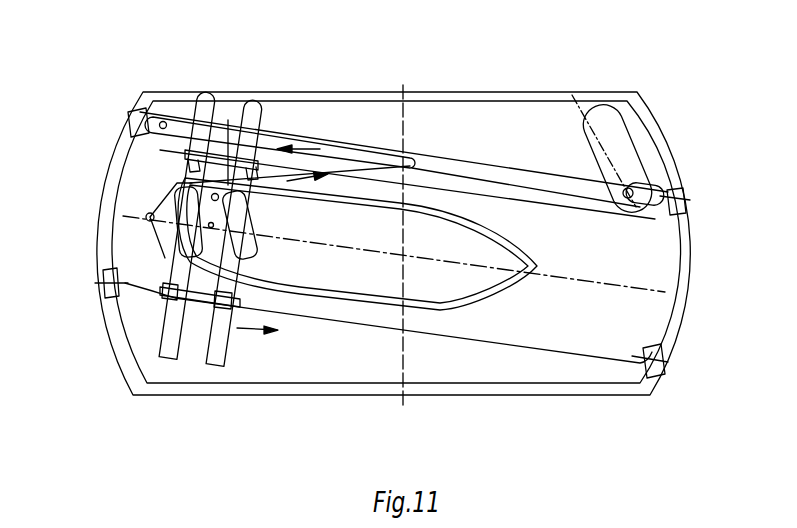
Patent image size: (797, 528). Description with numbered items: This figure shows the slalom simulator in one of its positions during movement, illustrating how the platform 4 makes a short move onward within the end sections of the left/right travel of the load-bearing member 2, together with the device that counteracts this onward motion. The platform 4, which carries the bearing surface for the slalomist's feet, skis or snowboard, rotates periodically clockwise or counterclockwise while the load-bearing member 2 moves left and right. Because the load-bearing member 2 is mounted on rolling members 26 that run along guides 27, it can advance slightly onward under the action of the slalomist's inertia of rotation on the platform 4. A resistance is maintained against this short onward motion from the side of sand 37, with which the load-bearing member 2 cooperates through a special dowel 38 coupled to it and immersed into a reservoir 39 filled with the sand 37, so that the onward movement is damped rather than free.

The load-bearing member 2 is at (193, 287).
The platform 4 is at (165, 258).
The rolling assemblies 26 is at (100, 262).
The guides 27 is at (115, 330).
The sand 37 is at (597, 117).
The dowel 38 is at (640, 187).
The reservoir 39 is at (623, 130).